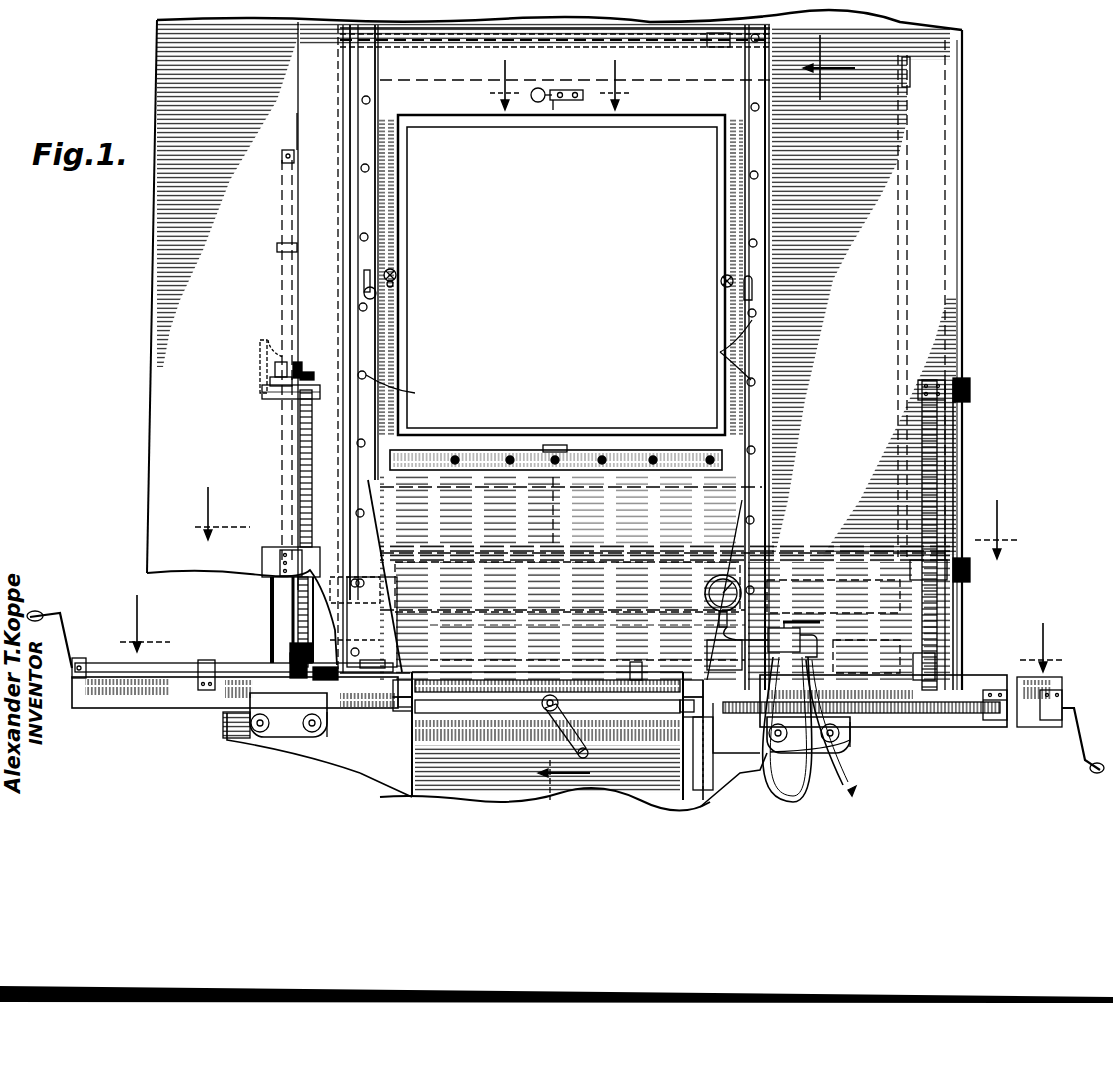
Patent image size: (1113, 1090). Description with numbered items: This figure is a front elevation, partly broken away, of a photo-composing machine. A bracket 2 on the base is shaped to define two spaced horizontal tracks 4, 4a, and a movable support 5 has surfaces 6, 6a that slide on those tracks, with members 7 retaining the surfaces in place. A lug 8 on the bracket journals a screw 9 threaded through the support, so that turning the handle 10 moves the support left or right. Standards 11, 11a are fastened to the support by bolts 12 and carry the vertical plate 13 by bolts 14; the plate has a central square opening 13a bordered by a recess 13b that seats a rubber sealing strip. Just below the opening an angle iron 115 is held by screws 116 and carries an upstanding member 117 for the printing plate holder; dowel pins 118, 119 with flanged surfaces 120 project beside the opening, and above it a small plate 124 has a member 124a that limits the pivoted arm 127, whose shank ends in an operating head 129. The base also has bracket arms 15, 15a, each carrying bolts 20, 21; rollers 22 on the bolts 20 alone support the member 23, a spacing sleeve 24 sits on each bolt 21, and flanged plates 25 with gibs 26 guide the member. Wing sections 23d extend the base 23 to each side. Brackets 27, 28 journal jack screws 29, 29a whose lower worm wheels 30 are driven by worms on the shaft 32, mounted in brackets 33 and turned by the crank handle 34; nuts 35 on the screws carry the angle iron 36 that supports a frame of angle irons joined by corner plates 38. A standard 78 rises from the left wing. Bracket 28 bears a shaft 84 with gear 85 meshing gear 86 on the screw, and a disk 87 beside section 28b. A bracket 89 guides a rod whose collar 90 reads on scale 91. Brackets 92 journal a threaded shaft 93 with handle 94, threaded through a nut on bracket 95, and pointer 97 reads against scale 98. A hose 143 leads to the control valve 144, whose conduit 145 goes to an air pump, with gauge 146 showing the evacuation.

The bracket 2 is at (478, 795).
The track 4 is at (390, 737).
The track 4a is at (690, 718).
The movable support 5 is at (490, 700).
The horizontally extending surface 6 is at (400, 708).
The horizontally extending surface 6a is at (683, 712).
The retaining member 7 is at (395, 690).
The lug 8 is at (526, 678).
The screw 9 is at (545, 712).
The handle 10 is at (586, 752).
The upstanding standard 11 is at (362, 482).
The upstanding standard 11a is at (742, 500).
The bolt 12 is at (380, 655).
The plate 13 is at (157, 412).
The square opening 13a is at (667, 128).
The recess 13b is at (402, 232).
The bolt 14 is at (559, 229).
The bracket arm 15 is at (290, 758).
The bracket arm 15a is at (740, 773).
The bolt 20 is at (311, 735).
The bolt 21 is at (261, 733).
The roller 22 is at (322, 738).
The member 23 is at (183, 712).
The wing section 23d is at (135, 710).
The spacing sleeve 24 is at (255, 742).
The flanged plate 25 is at (262, 693).
The gib 26 is at (224, 735).
The bracket 27 is at (291, 655).
The bracket 28 is at (288, 398).
The bracket section 28b is at (262, 396).
The jack screw 29 is at (300, 465).
The jack screw 29a is at (955, 608).
The worm wheel 30 is at (933, 715).
The shaft 32 is at (234, 681).
The bracket 33 is at (207, 660).
The crank handle 34 is at (62, 614).
The nut 35 is at (292, 550).
The angle iron 36 is at (545, 573).
The corner plate 38 is at (80, 658).
The standard 78 is at (282, 290).
The shaft 84 is at (268, 340).
The gear 85 is at (300, 364).
The gear 86 is at (312, 375).
The disk 87 is at (260, 353).
The bracket 89 is at (277, 247).
The collar 90 is at (282, 158).
The scale 91 is at (296, 113).
The bracket 92 is at (998, 720).
The threaded shaft 93 is at (978, 715).
The operating handle 94 is at (1085, 763).
The bracket 95 is at (695, 768).
The pointer 97 is at (638, 665).
The scale 98 is at (580, 680).
The angle iron 115 is at (495, 470).
The screw 116 is at (457, 455).
The upstanding member 117 is at (556, 445).
The dowel pin 118 is at (396, 274).
The dowel pin 119 is at (721, 283).
The flanged surface 120 is at (396, 283).
The plate 124 is at (570, 90).
The laterally extending member 124a is at (553, 110).
The pivoted arm 127 is at (540, 88).
The operating head 129 is at (364, 296).
The flexible hose 143 is at (797, 802).
The control valve 144 is at (817, 631).
The flexible conduit 145 is at (858, 790).
The gauge 146 is at (705, 593).